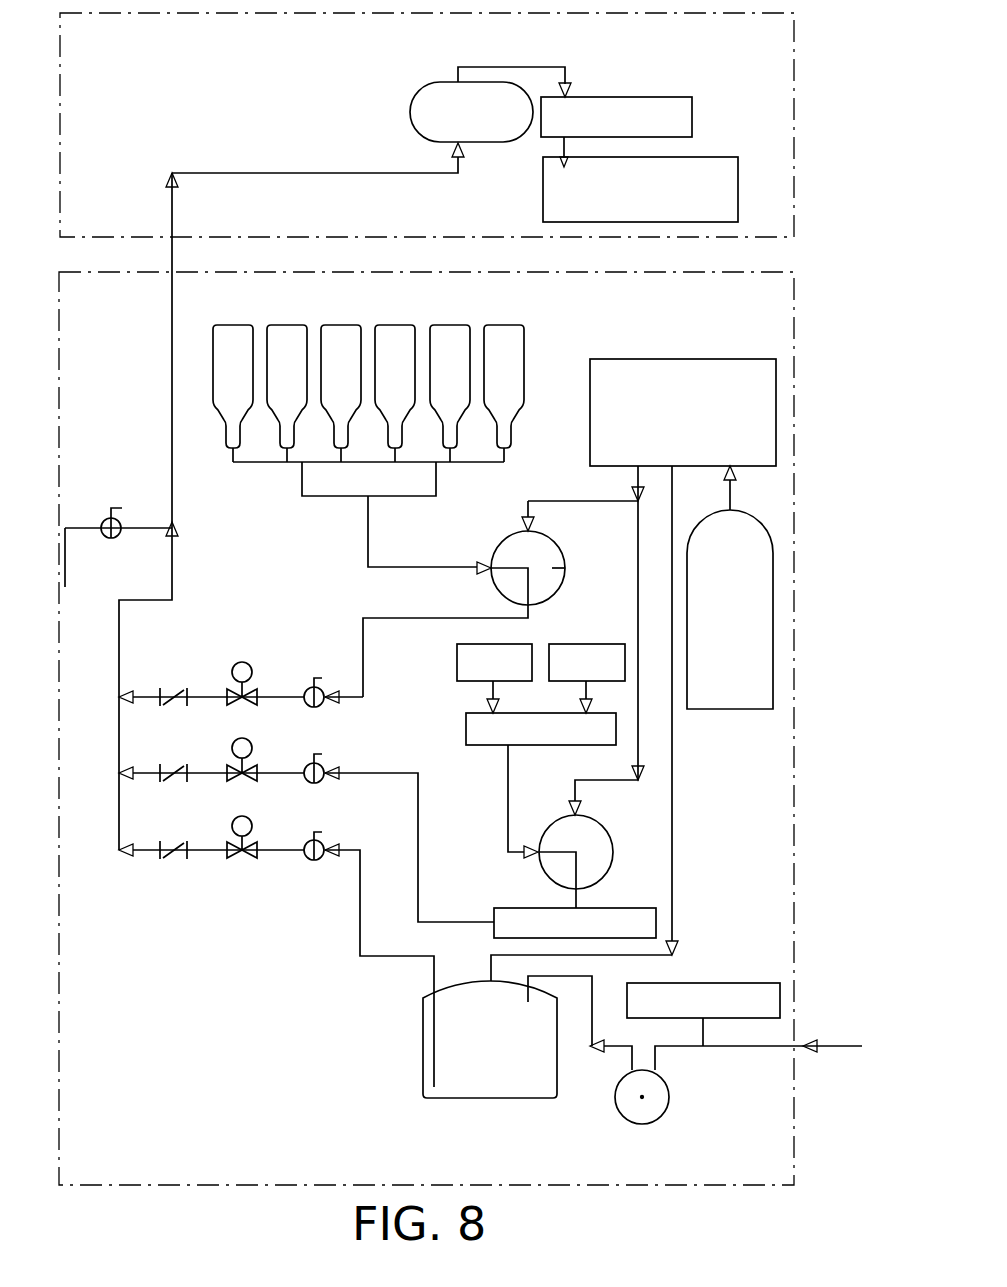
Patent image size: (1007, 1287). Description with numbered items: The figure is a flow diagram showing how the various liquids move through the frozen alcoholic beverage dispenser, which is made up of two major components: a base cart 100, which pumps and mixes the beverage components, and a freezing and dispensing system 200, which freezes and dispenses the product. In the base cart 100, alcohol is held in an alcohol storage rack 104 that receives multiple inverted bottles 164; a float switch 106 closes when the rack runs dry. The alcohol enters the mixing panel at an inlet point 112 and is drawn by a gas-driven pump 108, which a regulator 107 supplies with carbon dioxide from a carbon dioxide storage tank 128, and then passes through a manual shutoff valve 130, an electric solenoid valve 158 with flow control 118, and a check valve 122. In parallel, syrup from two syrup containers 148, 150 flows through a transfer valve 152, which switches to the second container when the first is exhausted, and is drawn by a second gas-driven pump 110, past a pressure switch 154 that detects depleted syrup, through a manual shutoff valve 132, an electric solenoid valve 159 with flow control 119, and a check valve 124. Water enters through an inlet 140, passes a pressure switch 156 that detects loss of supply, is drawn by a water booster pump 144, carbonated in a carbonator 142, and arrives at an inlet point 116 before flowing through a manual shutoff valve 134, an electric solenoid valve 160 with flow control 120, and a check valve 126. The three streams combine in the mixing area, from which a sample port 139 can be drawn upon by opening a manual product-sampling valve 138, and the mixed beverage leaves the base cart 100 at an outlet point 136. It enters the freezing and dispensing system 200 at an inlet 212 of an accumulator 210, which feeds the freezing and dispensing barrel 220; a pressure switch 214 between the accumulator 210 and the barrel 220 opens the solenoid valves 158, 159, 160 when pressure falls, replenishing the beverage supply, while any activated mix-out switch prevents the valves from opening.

The base cart 100 is at (803, 403).
The alcohol storage rack 104 is at (353, 395).
The float switch 106 is at (316, 490).
The regulator 107 is at (677, 370).
The gas-driven pump 108 is at (565, 568).
The gas-driven pump 110 is at (598, 840).
The inlet point 112 is at (480, 565).
The inlet point 116 is at (318, 862).
The flow control 118 is at (236, 703).
The flow control 119 is at (236, 780).
The flow control 120 is at (232, 858).
The check valve 122 is at (167, 705).
The check valve 124 is at (170, 782).
The check valve 126 is at (172, 862).
The carbon dioxide storage tank 128 is at (735, 700).
The manual shutoff valve 130 is at (318, 688).
The manual shutoff valve 132 is at (320, 764).
The manual shutoff valve 134 is at (323, 840).
The outlet point 136 is at (172, 272).
The manual product-sampling valve 138 is at (106, 520).
The sample port 139 is at (66, 568).
The inlet 140 is at (806, 1040).
The carbonator 142 is at (470, 1093).
The water booster pump 144 is at (665, 1097).
The syrup container 148 is at (457, 664).
The syrup container 150 is at (590, 655).
The transfer valve 152 is at (483, 737).
The pressure switch 154 is at (503, 915).
The pressure switch 156 is at (705, 992).
The electric solenoid valve 158 is at (248, 663).
The electric solenoid valve 159 is at (250, 748).
The electric solenoid valve 160 is at (251, 826).
The bottle 164 is at (232, 330).
The freezing and dispensing system 200 is at (806, 130).
The accumulator 210 is at (418, 118).
The inlet 212 is at (168, 196).
The pressure switch 214 is at (643, 106).
The freezing and dispensing barrel 220 is at (705, 167).